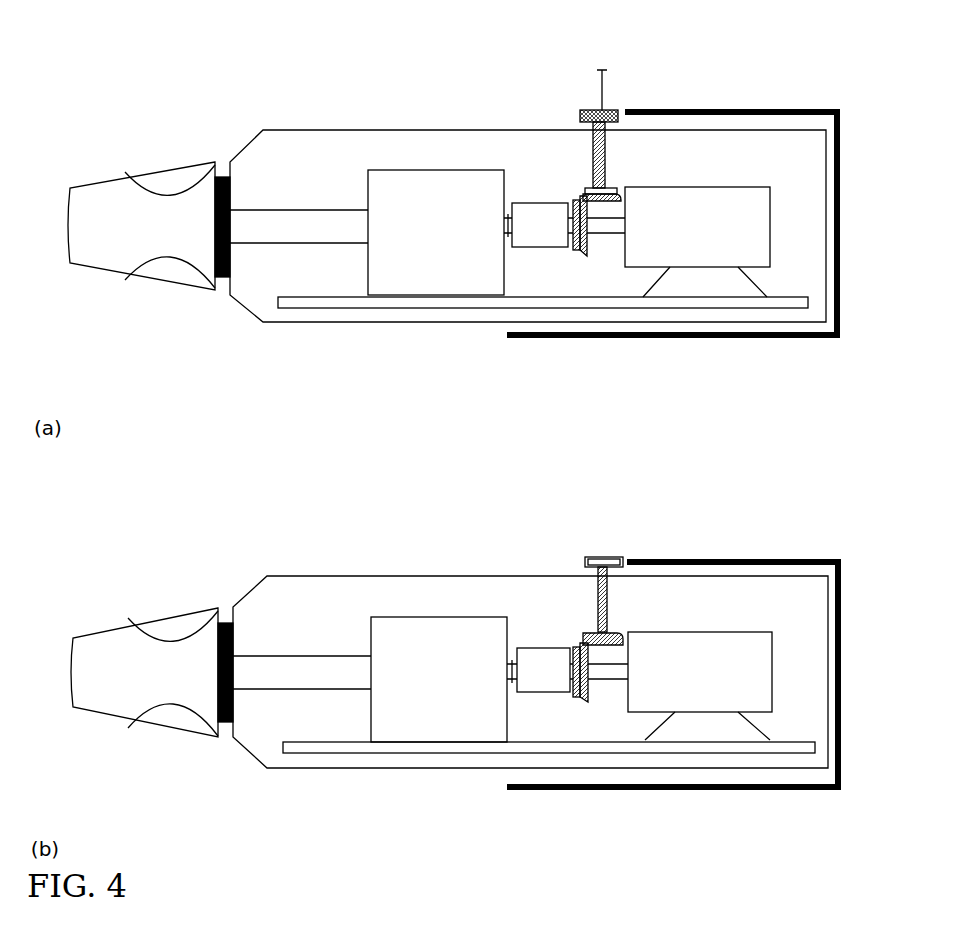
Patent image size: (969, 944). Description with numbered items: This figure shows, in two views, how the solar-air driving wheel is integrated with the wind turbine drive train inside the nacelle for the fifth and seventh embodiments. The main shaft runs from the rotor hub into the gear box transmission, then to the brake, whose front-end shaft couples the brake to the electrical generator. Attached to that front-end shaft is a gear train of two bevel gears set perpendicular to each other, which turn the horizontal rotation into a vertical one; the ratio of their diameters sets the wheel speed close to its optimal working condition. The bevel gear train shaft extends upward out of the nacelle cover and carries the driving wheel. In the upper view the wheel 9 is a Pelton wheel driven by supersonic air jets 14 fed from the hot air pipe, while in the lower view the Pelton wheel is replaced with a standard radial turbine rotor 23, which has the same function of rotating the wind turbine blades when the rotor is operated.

The wheel 9 is at (602, 72).
The supersonic air jets 14 is at (626, 110).
The radial turbine rotor 23 is at (611, 557).